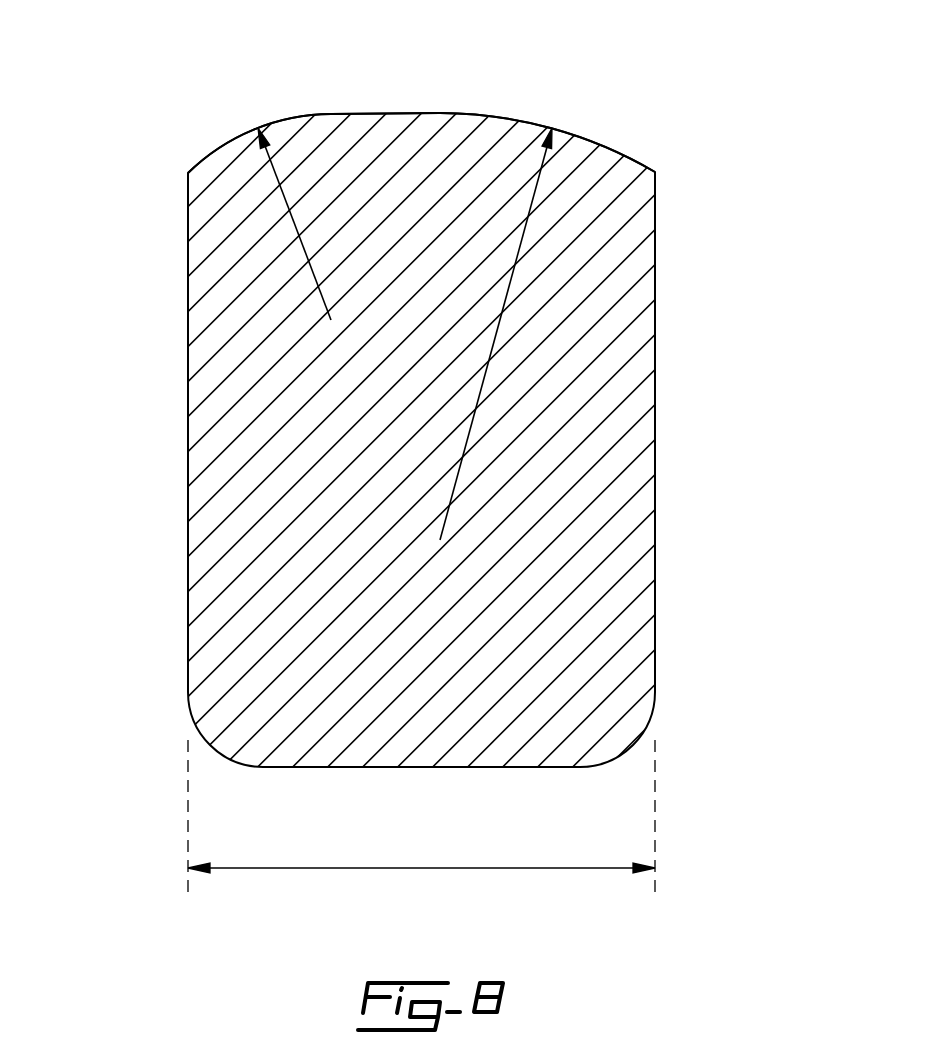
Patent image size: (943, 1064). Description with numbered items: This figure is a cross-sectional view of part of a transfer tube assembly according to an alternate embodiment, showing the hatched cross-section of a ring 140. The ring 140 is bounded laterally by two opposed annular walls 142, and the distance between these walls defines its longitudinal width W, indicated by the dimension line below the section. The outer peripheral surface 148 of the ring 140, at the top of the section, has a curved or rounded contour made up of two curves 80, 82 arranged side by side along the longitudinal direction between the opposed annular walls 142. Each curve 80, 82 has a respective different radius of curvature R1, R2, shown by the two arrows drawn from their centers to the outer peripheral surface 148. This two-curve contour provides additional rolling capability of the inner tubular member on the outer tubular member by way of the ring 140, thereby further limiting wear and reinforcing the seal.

The curve 80 is at (238, 133).
The curve 82 is at (610, 146).
The outer peripheral surface 148 is at (402, 113).
The annular walls 142 is at (188, 417).
The ring 140 is at (528, 637).
The radius of curvature R1 is at (313, 282).
The radius of curvature R2 is at (487, 372).
The longitudinal width W is at (421, 827).